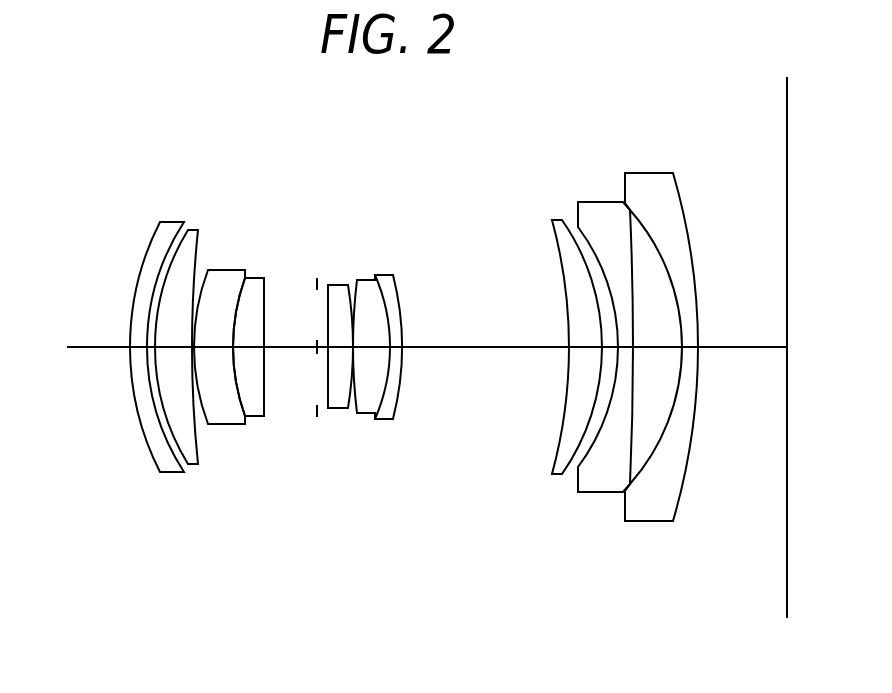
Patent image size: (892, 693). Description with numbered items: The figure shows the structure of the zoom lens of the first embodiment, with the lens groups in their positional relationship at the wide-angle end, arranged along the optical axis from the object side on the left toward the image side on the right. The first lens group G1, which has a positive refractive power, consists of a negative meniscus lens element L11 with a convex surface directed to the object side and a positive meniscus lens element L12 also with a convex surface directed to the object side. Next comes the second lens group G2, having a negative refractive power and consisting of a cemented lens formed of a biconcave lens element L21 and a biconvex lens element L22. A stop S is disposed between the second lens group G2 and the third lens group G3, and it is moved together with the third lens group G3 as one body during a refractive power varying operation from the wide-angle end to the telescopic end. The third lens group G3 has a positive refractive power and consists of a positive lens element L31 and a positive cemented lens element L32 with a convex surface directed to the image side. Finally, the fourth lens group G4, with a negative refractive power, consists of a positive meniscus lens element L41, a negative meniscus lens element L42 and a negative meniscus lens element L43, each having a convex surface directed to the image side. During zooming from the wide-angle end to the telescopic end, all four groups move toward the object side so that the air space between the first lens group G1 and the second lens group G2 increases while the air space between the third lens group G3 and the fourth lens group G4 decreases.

The first lens group G1 is at (207, 202).
The second lens group G2 is at (272, 202).
The third lens group G3 is at (405, 202).
The fourth lens group G4 is at (683, 159).
The stop S is at (318, 287).
The negative meniscus lens element L11 is at (168, 470).
The positive meniscus lens element L12 is at (193, 462).
The biconcave lens element L21 is at (225, 420).
The biconvex lens element L22 is at (253, 415).
The positive lens element L31 is at (338, 410).
The positive cemented lens element L32 is at (380, 421).
The positive meniscus lens element L41 is at (555, 472).
The negative meniscus lens element L42 is at (599, 489).
The negative meniscus lens element L43 is at (640, 519).